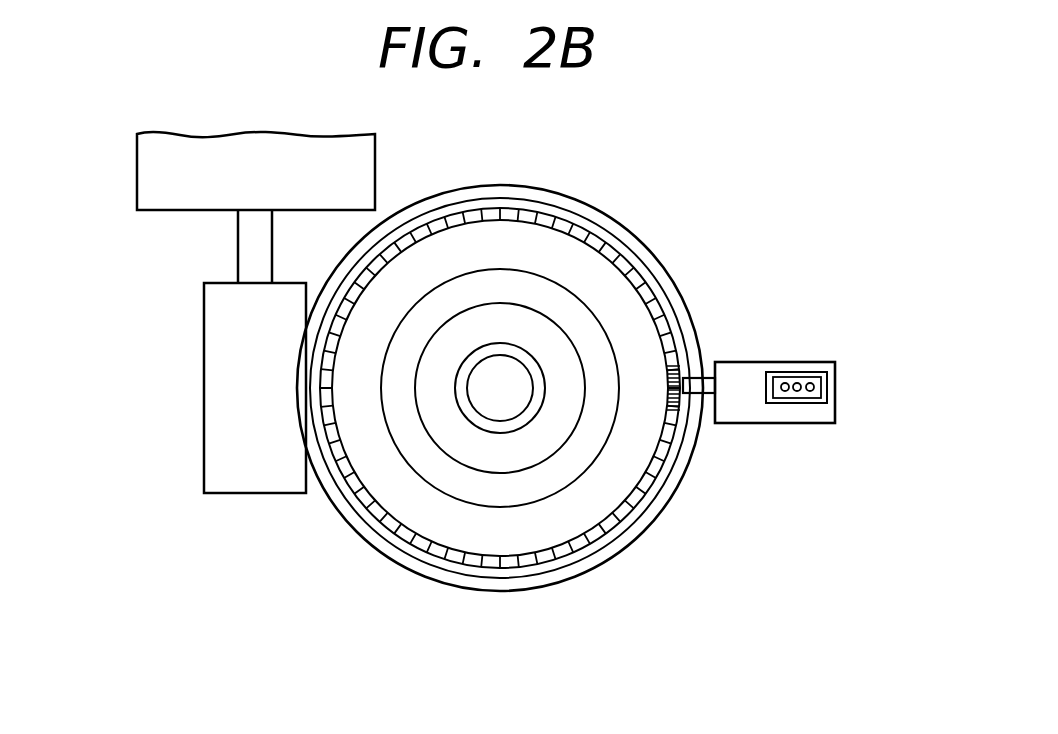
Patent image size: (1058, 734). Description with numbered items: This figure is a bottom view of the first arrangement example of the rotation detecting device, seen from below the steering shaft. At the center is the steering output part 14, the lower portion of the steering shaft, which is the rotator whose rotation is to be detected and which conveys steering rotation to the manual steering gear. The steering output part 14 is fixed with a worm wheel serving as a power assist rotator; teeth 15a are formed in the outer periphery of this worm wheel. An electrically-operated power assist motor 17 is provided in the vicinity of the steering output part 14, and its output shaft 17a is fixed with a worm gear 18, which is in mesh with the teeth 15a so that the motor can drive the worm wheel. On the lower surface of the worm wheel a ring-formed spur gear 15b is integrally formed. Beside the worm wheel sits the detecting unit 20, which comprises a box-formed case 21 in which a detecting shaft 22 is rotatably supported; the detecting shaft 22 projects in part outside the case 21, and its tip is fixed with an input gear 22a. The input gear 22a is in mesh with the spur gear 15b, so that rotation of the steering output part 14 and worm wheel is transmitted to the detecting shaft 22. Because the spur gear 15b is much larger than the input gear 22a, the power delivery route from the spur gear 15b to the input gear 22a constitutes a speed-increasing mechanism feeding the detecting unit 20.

The steering output part 14 is at (508, 395).
The teeth 15a is at (650, 518).
The spur gear 15b is at (620, 263).
The power assist motor 17 is at (177, 183).
The output shaft 17a is at (250, 245).
The worm gear 18 is at (240, 393).
The detecting unit 20 is at (807, 354).
The case 21 is at (835, 409).
The detecting shaft 22 is at (695, 380).
The input gear 22a is at (663, 390).